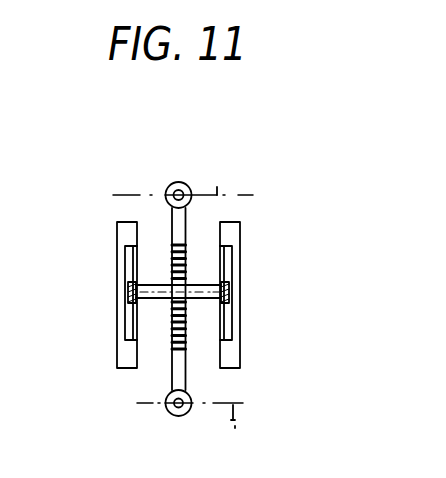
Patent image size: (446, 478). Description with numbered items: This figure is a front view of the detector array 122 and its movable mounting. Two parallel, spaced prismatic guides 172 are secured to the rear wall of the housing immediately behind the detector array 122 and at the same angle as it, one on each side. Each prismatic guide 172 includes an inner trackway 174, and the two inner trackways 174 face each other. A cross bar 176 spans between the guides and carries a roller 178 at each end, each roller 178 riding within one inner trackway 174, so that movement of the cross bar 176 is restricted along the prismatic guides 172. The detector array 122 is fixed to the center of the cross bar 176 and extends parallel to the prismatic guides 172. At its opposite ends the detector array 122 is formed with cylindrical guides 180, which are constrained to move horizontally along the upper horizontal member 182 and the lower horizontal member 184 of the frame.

The detector array 122 is at (172, 348).
The prismatic guide 172 is at (117, 239).
The inner trackway 174 is at (131, 267).
The cross bar 176 is at (222, 298).
The roller 178 is at (130, 300).
The cylindrical guide 180 is at (194, 155).
The upper horizontal member 182 is at (227, 176).
The lower horizontal member 184 is at (238, 432).